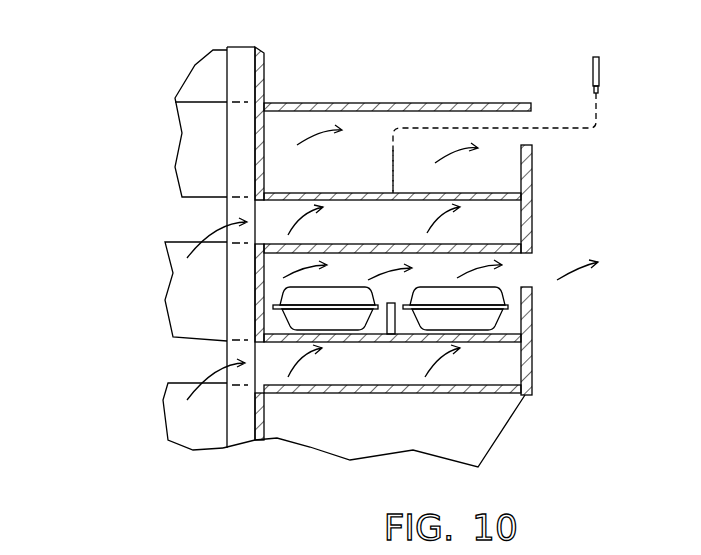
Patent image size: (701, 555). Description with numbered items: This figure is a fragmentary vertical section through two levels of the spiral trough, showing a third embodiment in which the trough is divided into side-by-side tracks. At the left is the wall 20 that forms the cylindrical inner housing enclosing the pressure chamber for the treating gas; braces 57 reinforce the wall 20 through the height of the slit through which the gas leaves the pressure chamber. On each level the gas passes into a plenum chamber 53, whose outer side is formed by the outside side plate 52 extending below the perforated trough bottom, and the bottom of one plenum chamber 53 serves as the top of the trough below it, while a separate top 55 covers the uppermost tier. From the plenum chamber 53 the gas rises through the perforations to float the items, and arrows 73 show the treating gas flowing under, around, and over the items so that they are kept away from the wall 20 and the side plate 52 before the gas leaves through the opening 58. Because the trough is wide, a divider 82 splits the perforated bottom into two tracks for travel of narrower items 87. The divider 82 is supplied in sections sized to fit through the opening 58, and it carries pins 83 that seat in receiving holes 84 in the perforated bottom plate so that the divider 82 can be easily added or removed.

The wall 20 is at (264, 78).
The braces 57 is at (235, 147).
The top 55 is at (500, 102).
The divider 82 is at (604, 63).
The pins 83 is at (603, 91).
The opening 58 is at (527, 136).
The receiving holes 84 is at (392, 192).
The arrows 73 is at (295, 266).
The narrower items 87 is at (505, 318).
The outside side plate 52 is at (530, 353).
The plenum chamber 53 is at (512, 373).